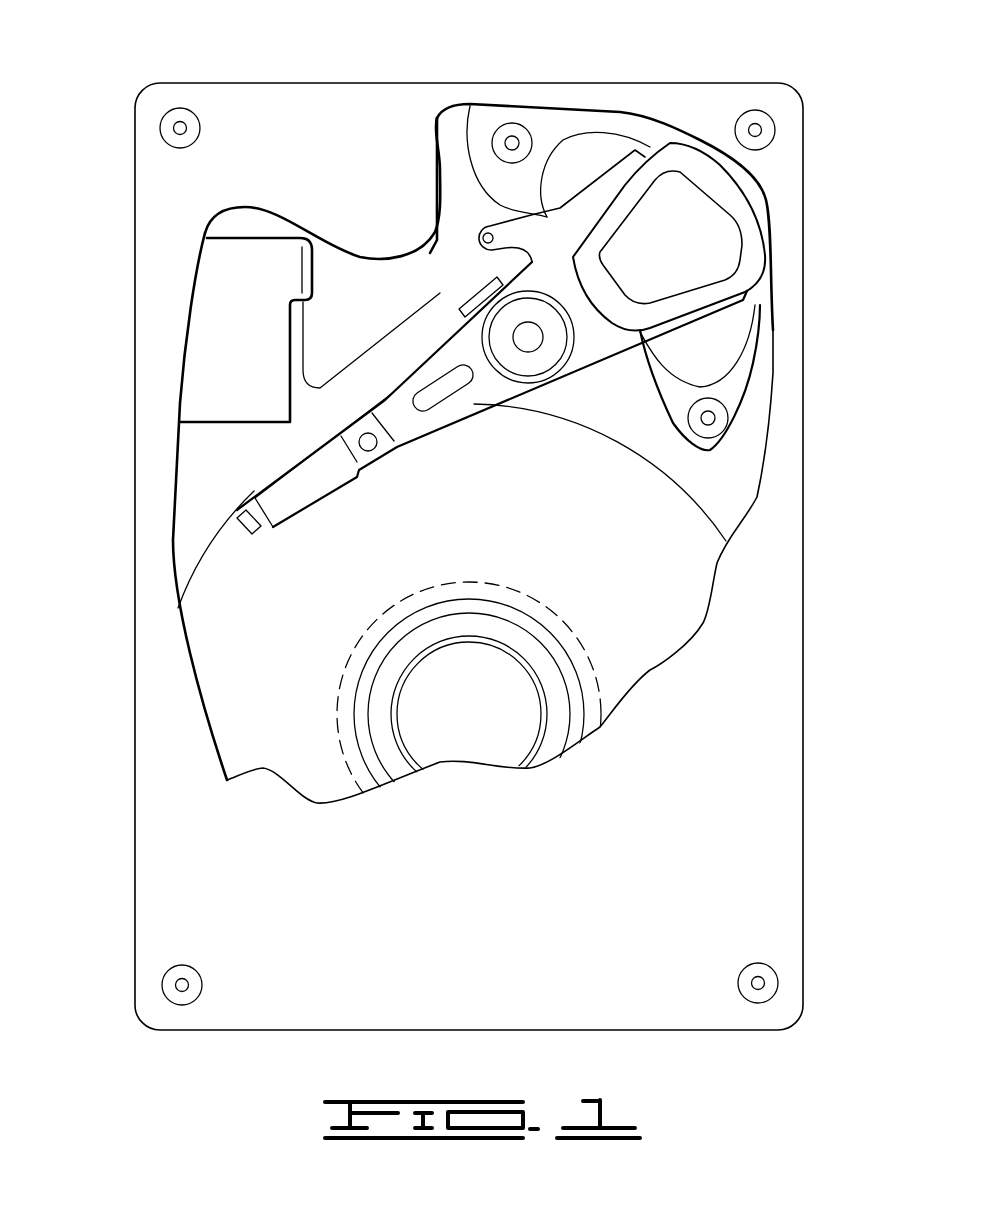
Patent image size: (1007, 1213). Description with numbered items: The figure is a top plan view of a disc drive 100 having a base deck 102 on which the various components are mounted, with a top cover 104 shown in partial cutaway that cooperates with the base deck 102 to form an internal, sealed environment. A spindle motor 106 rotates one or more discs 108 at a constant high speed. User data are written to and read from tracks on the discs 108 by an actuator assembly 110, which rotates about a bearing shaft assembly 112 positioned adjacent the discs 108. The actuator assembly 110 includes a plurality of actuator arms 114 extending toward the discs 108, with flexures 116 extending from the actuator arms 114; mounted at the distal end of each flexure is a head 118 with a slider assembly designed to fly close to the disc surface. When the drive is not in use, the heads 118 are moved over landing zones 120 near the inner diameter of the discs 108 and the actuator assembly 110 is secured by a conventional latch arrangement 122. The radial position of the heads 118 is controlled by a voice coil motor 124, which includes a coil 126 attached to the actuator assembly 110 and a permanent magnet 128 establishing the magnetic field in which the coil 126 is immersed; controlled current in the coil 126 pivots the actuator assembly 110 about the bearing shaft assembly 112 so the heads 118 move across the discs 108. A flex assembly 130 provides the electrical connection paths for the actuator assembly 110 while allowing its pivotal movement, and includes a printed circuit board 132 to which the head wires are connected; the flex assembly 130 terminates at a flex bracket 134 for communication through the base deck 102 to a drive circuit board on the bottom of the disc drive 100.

The disc drive 100 is at (225, 60).
The base deck 102 is at (228, 450).
The top cover 104 is at (188, 805).
The spindle motor 106 is at (478, 722).
The discs 108 is at (670, 603).
The actuator assembly 110 is at (470, 425).
The bearing shaft assembly 112 is at (535, 342).
The actuator arms 114 is at (400, 423).
The flexures 116 is at (318, 480).
The head 118 is at (242, 537).
The landing zones 120 is at (345, 668).
The latch arrangement 122 is at (478, 232).
The voice coil motor 124 is at (590, 150).
The coil 126 is at (735, 205).
The permanent magnet 128 is at (553, 170).
The flex assembly 130 is at (408, 318).
The printed circuit board 132 is at (465, 295).
The flex bracket 134 is at (243, 318).